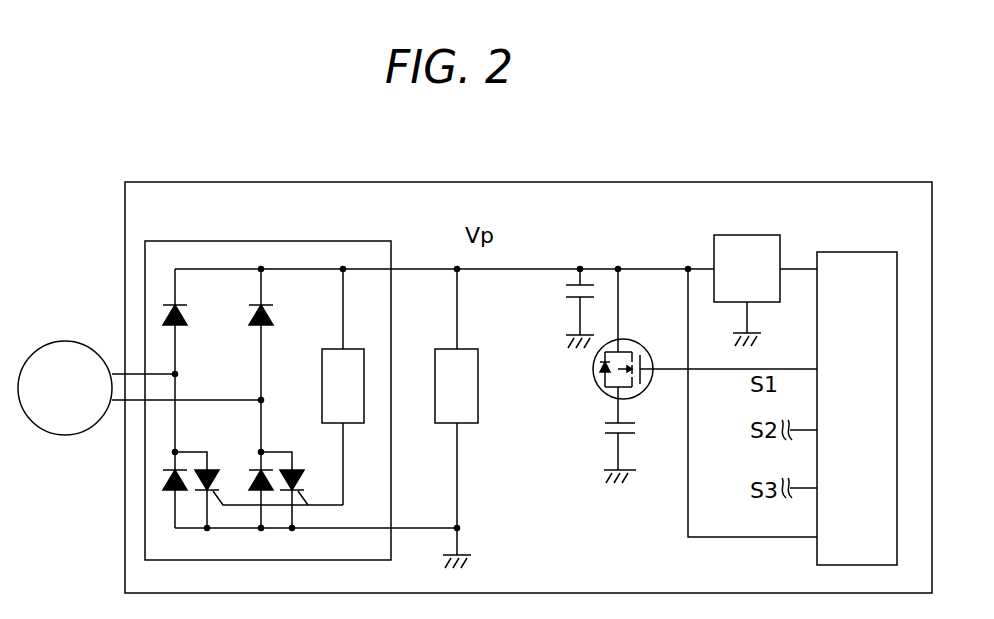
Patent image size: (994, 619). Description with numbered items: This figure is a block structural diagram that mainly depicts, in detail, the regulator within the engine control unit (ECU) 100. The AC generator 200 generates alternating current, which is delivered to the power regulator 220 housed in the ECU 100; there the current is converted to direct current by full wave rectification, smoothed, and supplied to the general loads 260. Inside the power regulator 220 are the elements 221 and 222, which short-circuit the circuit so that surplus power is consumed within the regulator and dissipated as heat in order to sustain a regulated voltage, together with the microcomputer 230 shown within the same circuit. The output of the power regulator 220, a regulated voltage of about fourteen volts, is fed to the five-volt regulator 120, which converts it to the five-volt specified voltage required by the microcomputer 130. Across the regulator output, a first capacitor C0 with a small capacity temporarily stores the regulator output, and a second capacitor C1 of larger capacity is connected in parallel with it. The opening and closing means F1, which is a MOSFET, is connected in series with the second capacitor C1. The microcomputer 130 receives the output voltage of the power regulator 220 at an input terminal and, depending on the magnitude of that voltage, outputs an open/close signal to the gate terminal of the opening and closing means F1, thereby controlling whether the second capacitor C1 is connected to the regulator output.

The engine control unit (ECU) 100 is at (598, 182).
The 5V regulator 120 is at (748, 235).
The microcomputer 130 is at (866, 252).
The AC generator 200 is at (64, 341).
The power regulator 220 is at (255, 241).
The element 221 is at (215, 468).
The element 222 is at (300, 468).
The microcomputer 230 is at (330, 349).
The general loads 260 is at (445, 349).
The first capacitor C0 is at (567, 296).
The second capacitor C1 is at (607, 434).
The opening and closing means F1 is at (596, 386).